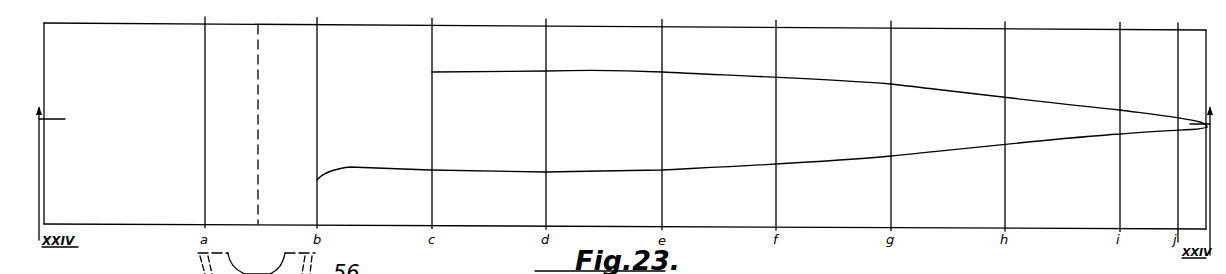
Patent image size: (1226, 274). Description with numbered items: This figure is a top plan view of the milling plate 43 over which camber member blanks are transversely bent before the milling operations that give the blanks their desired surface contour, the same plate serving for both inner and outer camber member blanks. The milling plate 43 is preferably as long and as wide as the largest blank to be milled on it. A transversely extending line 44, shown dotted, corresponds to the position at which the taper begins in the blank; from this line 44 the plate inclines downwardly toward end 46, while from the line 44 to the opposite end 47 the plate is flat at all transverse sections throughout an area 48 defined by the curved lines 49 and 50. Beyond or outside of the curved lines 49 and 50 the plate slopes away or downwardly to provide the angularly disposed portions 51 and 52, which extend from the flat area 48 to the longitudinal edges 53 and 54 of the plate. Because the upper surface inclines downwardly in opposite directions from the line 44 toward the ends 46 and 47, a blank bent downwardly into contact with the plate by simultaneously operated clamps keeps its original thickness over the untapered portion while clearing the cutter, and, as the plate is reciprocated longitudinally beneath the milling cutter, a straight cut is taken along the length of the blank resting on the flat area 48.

The milling plate 43 is at (148, 147).
The transversely extending line 44 is at (258, 141).
The end of milling plate 46 is at (44, 200).
The opposite end of milling plate 47 is at (1206, 183).
The flat area 48 is at (626, 131).
The curved line 49 is at (717, 75).
The curved line 50 is at (726, 166).
The angularly disposed portion 51 is at (968, 71).
The angularly disposed portion 52 is at (957, 206).
The longitudinal edge 53 is at (715, 27).
The longitudinal edge 54 is at (733, 228).